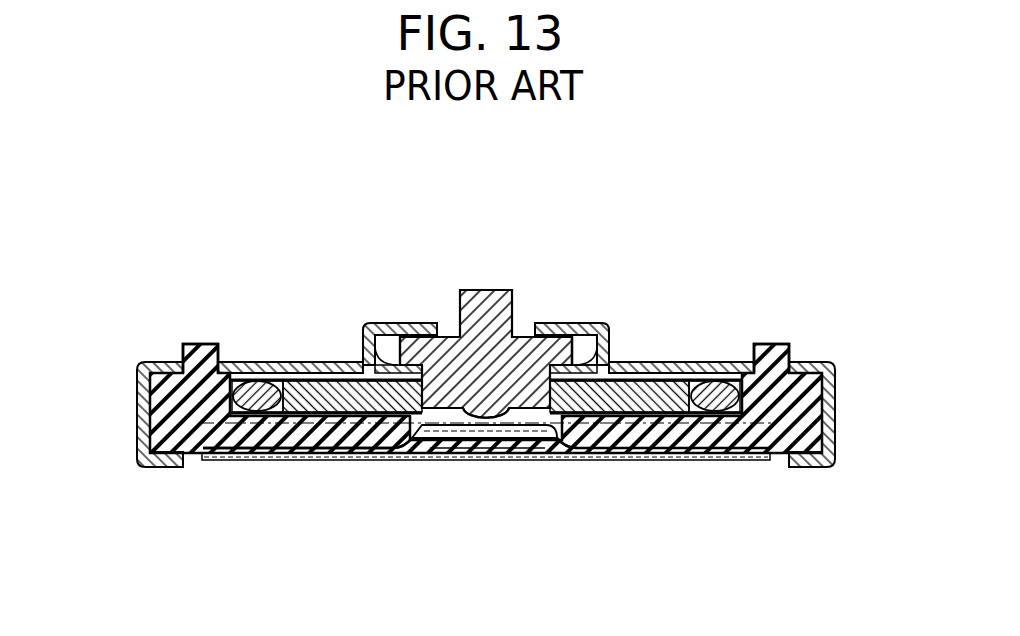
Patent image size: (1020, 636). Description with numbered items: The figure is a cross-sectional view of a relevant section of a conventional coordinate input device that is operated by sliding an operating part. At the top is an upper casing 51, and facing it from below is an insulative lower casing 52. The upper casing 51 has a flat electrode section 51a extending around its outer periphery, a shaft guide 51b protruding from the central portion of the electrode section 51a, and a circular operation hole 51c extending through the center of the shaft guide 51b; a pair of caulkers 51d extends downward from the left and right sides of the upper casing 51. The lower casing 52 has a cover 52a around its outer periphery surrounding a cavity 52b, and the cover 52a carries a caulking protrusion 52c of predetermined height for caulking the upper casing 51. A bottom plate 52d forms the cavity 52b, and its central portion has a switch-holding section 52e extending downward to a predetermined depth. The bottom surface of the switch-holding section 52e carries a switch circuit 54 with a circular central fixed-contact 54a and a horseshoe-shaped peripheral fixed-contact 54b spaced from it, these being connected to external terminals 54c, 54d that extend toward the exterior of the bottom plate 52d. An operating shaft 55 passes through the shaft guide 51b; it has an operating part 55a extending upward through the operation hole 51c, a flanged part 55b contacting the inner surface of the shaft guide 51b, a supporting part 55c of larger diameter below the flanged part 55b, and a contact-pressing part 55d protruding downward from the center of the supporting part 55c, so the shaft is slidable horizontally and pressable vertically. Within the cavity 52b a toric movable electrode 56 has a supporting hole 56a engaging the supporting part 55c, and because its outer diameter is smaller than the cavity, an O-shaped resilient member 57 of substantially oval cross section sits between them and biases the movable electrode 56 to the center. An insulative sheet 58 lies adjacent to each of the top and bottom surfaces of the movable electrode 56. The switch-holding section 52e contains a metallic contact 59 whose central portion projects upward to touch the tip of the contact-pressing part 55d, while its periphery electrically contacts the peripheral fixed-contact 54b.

The upper casing 51 is at (292, 350).
The electrode section 51a is at (624, 336).
The shaft guide 51b is at (576, 355).
The operation hole 51c is at (440, 328).
The caulkers 51d is at (141, 431).
The lower casing 52 is at (241, 452).
The cover 52a is at (141, 393).
The cavity 52b is at (732, 372).
The caulking protrusion 52c is at (206, 343).
The bottom plate 52d is at (700, 455).
The switch-holding section 52e is at (560, 440).
The switch circuit 54 is at (454, 462).
The central fixed-contact 54a is at (463, 452).
The peripheral fixed-contact 54b is at (405, 442).
The external terminal 54c is at (636, 452).
The external terminal 54d is at (289, 448).
The operating shaft 55 is at (490, 278).
The operating part 55a is at (487, 278).
The flanged part 55b is at (610, 347).
The supporting part 55c is at (380, 340).
The contact-pressing part 55d is at (490, 420).
The movable electrode 56 is at (357, 381).
The supporting hole 56a is at (430, 405).
The resilient member 57 is at (258, 383).
The insulative sheet 58 is at (334, 393).
The metallic contact 59 is at (440, 440).